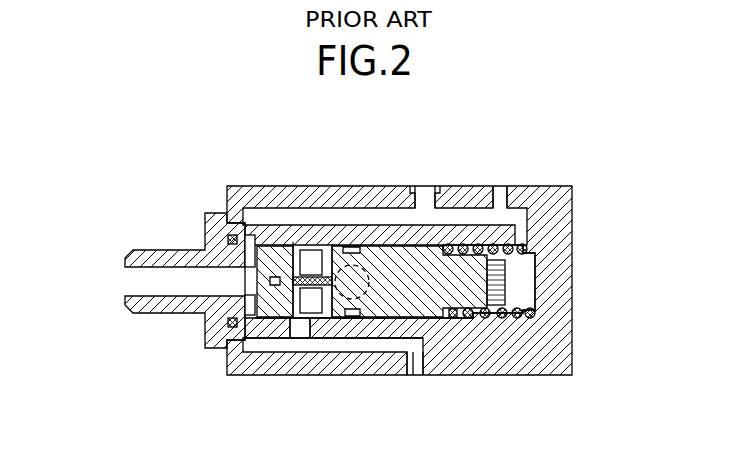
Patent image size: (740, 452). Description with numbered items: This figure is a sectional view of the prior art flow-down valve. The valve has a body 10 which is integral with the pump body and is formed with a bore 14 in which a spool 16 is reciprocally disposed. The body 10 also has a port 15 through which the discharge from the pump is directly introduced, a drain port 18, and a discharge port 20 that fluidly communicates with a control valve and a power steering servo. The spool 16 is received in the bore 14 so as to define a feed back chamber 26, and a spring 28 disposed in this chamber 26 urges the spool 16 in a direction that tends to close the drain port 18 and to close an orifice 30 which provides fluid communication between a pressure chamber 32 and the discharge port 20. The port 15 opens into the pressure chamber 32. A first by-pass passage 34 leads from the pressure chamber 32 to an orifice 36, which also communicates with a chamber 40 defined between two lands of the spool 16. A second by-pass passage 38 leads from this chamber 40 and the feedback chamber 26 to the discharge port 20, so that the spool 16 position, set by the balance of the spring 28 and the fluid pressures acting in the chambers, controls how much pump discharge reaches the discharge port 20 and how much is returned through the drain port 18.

The body 10 is at (535, 375).
The bore 14 is at (447, 318).
The port 15 is at (316, 262).
The spool 16 is at (473, 300).
The drain port 18 is at (358, 265).
The discharge port 20 is at (133, 282).
The feed back chamber 26 is at (523, 293).
The spring 28 is at (527, 252).
The orifice 30 is at (273, 338).
The pressure chamber 32 is at (298, 340).
The first by-pass passage 34 is at (353, 343).
The orifice 36 is at (413, 330).
The second by-pass passage 38 is at (398, 218).
The chamber 40 is at (435, 212).